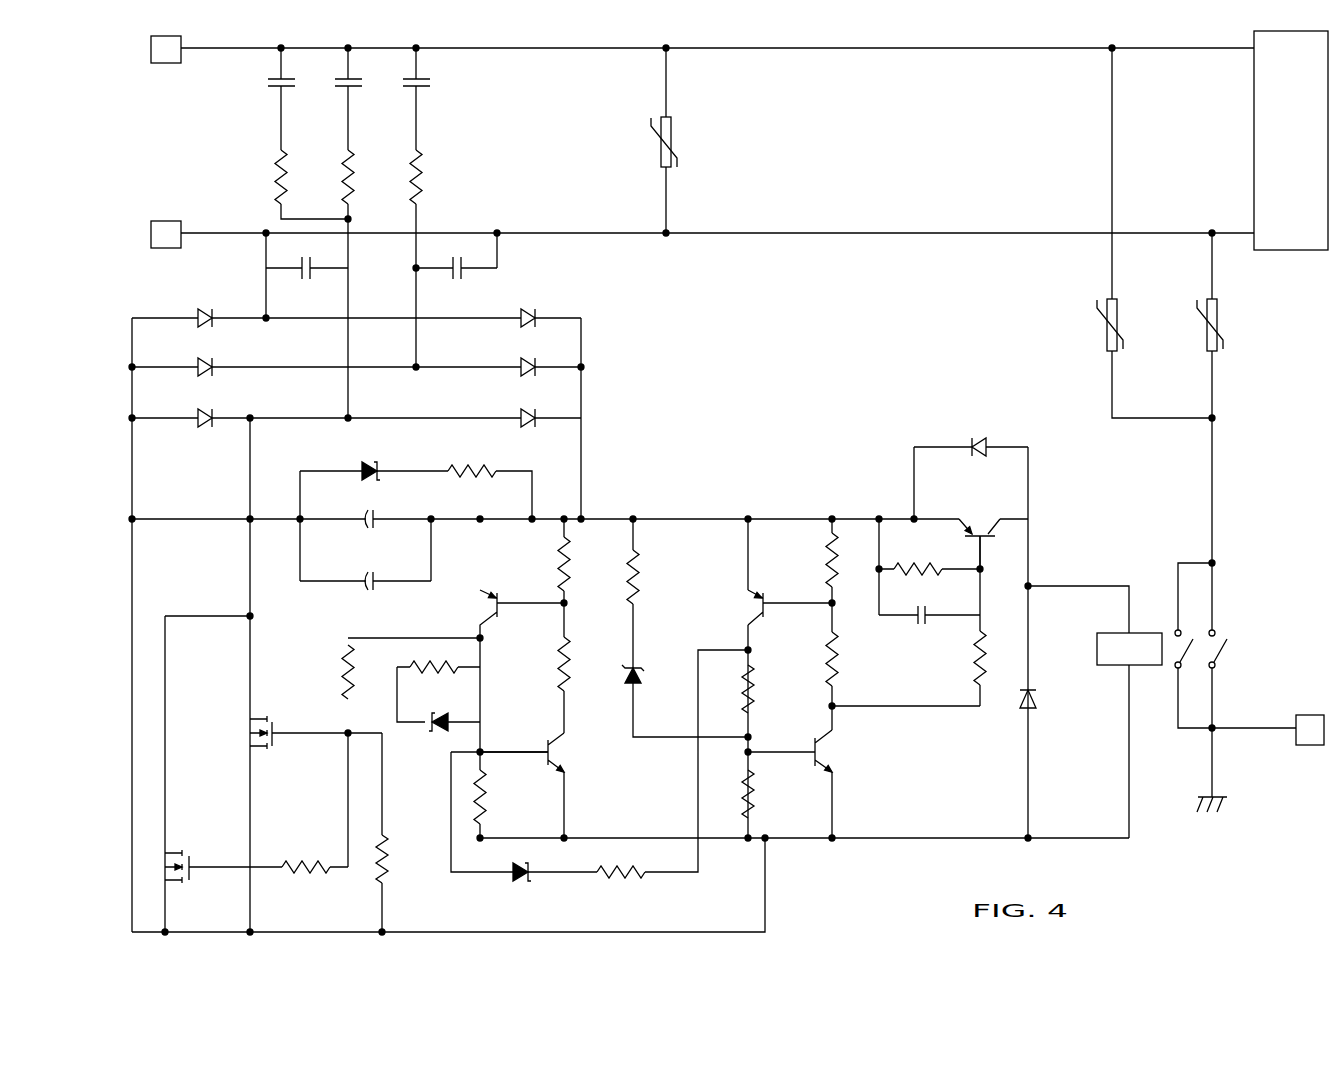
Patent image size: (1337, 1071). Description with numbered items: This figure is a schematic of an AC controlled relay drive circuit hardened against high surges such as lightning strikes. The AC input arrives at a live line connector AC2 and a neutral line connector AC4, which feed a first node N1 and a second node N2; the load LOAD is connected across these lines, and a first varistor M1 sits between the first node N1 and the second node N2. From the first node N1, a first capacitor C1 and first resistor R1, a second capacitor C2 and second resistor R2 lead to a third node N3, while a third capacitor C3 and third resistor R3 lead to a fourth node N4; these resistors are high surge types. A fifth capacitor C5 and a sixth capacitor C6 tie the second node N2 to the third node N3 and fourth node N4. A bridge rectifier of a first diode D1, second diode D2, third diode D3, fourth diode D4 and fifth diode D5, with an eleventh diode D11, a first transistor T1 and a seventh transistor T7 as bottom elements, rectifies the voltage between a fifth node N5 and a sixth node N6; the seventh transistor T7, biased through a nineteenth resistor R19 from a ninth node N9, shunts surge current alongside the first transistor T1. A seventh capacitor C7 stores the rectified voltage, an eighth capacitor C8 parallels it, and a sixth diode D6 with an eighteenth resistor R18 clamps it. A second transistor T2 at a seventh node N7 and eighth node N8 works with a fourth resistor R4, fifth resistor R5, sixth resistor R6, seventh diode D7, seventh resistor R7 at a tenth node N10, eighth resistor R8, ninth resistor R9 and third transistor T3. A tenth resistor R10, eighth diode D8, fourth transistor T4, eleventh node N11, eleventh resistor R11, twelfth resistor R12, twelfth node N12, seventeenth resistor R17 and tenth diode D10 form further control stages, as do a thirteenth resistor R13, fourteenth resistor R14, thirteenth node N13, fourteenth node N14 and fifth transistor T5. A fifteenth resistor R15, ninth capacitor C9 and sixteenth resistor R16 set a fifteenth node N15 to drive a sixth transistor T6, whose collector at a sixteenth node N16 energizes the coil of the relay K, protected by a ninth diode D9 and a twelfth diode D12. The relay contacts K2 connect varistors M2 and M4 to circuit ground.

The AC line input connector AC2 is at (159, 48).
The AC neutral input connector AC4 is at (163, 234).
The load LOAD is at (1291, 140).
The first node N1 is at (282, 37).
The second node N2 is at (255, 223).
The third node N3 is at (363, 221).
The fourth node N4 is at (403, 267).
The fifth node N5 is at (118, 366).
The sixth node N6 is at (595, 366).
The seventh node N7 is at (495, 637).
The eighth node N8 is at (579, 602).
The ninth node N9 is at (363, 722).
The tenth node N10 is at (498, 743).
The eleventh node N11 is at (766, 651).
The twelfth node N12 is at (766, 737).
The thirteenth node N13 is at (851, 604).
The fourteenth node N14 is at (813, 707).
The fifteenth node N15 is at (999, 570).
The sixteenth node N16 is at (1047, 574).
The first capacitor C1 is at (327, 78).
The second capacitor C2 is at (259, 78).
The third capacitor C3 is at (395, 78).
The fifth capacitor C5 is at (307, 268).
The sixth capacitor C6 is at (456, 268).
The seventh capacitor C7 is at (370, 533).
The eighth capacitor C8 is at (370, 594).
The ninth capacitor C9 is at (923, 636).
The first resistor R1 is at (370, 177).
The second resistor R2 is at (302, 177).
The third resistor R3 is at (437, 177).
The fourth resistor R4 is at (332, 672).
The fifth resistor R5 is at (401, 858).
The sixth resistor R6 is at (441, 676).
The seventh resistor R7 is at (500, 795).
The eighth resistor R8 is at (546, 561).
The ninth resistor R9 is at (582, 664).
The tenth resistor R10 is at (650, 577).
The eleventh resistor R11 is at (765, 689).
The twelfth resistor R12 is at (768, 792).
The thirteenth resistor R13 is at (802, 560).
The fourteenth resistor R14 is at (852, 659).
The fifteenth resistor R15 is at (922, 553).
The sixteenth resistor R16 is at (998, 658).
The seventeenth resistor R17 is at (619, 881).
The eighteenth resistor R18 is at (469, 452).
The nineteenth resistor R19 is at (306, 888).
The first diode D1 is at (209, 329).
The second diode D2 is at (530, 329).
The third diode D3 is at (209, 378).
The fourth diode D4 is at (530, 378).
The fifth diode D5 is at (530, 430).
The sixth diode D6 is at (369, 457).
The seventh diode D7 is at (423, 740).
The eighth diode D8 is at (653, 682).
The ninth diode D9 is at (1046, 697).
The tenth diode D10 is at (522, 886).
The eleventh diode D11 is at (210, 430).
The twelfth diode D12 is at (980, 435).
The first transistor T1 is at (276, 750).
The second transistor T2 is at (507, 614).
The third transistor T3 is at (534, 752).
The fourth transistor T4 is at (774, 607).
The fifth transistor T5 is at (802, 751).
The sixth transistor T6 is at (979, 532).
The seventh transistor T7 is at (192, 883).
The first varistor M1 is at (649, 142).
The varistor M2 is at (1223, 325).
The varistor M4 is at (1123, 325).
The relay K is at (1129, 649).
The relay DPST contacts K2 is at (1252, 687).